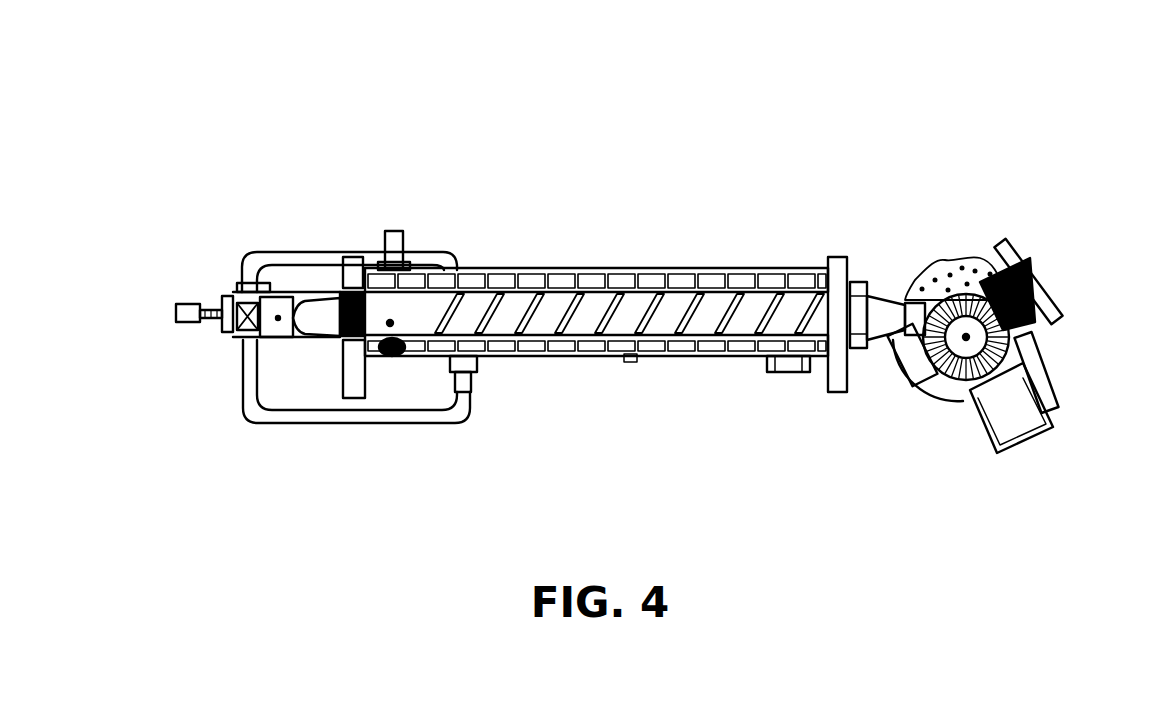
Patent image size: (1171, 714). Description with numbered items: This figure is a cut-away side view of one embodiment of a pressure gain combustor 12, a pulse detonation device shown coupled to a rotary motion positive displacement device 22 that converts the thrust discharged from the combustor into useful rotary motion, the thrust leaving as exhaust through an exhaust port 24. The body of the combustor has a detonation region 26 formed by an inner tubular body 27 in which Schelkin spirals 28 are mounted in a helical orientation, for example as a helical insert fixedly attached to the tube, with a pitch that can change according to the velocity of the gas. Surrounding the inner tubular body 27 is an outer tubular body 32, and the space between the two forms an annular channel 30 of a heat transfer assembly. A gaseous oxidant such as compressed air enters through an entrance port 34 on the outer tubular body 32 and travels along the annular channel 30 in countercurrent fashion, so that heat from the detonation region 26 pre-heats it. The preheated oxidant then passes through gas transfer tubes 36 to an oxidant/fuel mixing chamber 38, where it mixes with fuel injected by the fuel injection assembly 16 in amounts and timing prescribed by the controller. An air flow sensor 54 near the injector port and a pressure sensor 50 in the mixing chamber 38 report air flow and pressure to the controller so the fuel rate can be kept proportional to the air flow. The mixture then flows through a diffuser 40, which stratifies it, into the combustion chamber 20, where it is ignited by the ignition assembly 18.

The pressure gain combustor 12 is at (452, 148).
The fuel injection assembly 16 is at (178, 316).
The ignition assembly 18 is at (403, 248).
The combustion chamber 20 is at (400, 314).
The rotary motion positive displacement device 22 is at (1090, 292).
The exhaust port 24 is at (1050, 430).
The detonation region 26 is at (632, 305).
The inner tubular body 27 is at (576, 356).
The Schelkin spirals 28 is at (757, 270).
The annular channel 30 is at (668, 338).
The outer tubular body 32 is at (505, 358).
The entrance port 34 is at (790, 372).
The gas transfer tubes 36 is at (348, 424).
The oxidant/fuel mixing chamber 38 is at (222, 296).
The diffuser 40 is at (342, 253).
The pressure sensor 50 is at (302, 346).
The air flow sensor 54 is at (317, 313).